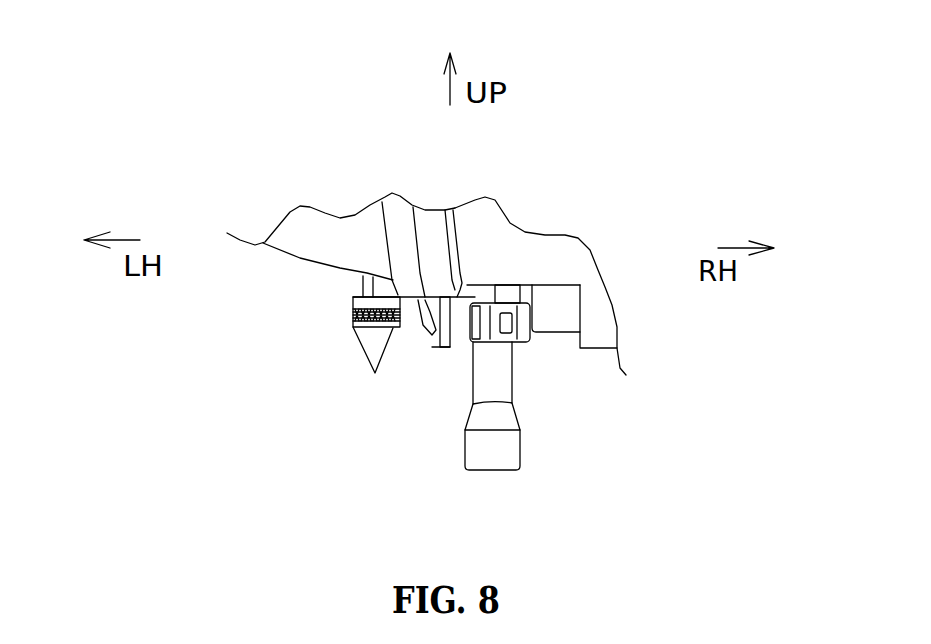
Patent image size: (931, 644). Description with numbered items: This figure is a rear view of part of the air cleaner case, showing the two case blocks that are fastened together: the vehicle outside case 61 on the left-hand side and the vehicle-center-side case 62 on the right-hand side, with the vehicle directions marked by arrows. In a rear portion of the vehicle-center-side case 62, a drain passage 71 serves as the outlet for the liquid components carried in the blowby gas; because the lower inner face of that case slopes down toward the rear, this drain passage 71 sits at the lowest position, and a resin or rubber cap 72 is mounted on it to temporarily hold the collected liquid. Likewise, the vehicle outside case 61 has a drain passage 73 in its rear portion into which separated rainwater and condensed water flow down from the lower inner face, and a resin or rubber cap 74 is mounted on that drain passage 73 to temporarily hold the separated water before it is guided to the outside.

The vehicle outside case 61 is at (305, 245).
The vehicle-center-side case 62 is at (558, 275).
The drain passage 71 is at (505, 292).
The cap 72 is at (513, 387).
The drain passage 73 is at (363, 282).
The cap 74 is at (362, 352).